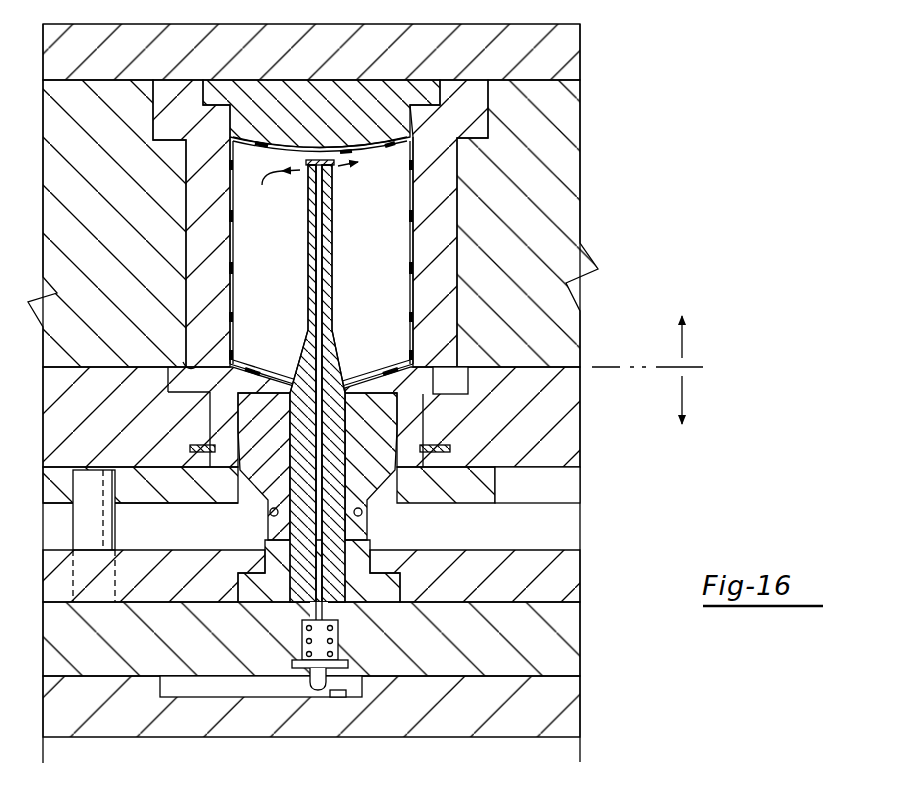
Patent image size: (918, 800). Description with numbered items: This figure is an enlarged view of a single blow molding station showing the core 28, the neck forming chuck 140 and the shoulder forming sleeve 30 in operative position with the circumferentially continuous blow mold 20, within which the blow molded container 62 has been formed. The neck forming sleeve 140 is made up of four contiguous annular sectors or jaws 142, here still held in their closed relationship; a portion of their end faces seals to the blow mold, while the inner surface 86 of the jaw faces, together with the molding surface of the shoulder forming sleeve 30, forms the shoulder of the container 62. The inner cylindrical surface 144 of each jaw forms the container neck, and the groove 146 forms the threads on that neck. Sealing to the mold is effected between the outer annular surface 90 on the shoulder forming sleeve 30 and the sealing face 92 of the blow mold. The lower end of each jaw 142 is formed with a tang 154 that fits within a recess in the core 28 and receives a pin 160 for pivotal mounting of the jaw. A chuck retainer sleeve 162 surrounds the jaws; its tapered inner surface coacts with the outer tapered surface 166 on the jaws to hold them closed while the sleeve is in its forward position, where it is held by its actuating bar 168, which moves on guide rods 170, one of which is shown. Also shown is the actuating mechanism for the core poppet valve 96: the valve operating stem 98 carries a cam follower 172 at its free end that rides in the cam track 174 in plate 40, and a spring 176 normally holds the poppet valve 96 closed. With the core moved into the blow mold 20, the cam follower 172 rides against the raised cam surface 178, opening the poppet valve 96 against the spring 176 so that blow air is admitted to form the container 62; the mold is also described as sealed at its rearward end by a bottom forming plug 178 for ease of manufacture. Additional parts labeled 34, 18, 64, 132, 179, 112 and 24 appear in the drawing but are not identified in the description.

The top clamp plate 34 is at (580, 60).
The blow mold 20 is at (485, 122).
The blow molded container 62 is at (418, 183).
The core poppet valve 96 is at (270, 193).
The core pin tip 179 is at (391, 135).
The core 28 is at (333, 266).
The sealing face of the blow mold 92 is at (184, 362).
The neck forming sleeve 140 is at (262, 398).
The groove 146 is at (295, 385).
The jaws 142 is at (365, 382).
The sealing face 86 is at (348, 392).
The outer annular surface 90 is at (417, 362).
The shoulder forming sleeve 30 is at (460, 375).
The stripper plate 18 is at (567, 400).
The chuck retainer sleeve 162 is at (400, 455).
The outer tapered surface 166 is at (253, 403).
The guide rods 170 is at (95, 487).
The tang 154 is at (267, 505).
The pin 160 is at (273, 512).
The inner cylindrical surface 144 is at (398, 485).
The actuating bar 168 is at (475, 505).
The support plate 64 is at (567, 578).
The spring 176 is at (302, 635).
The valve operating stem 98 is at (312, 610).
The intermediate plate 132 is at (567, 652).
The plate 40 is at (567, 723).
The cam track 174 is at (203, 693).
The cam follower 172 is at (316, 691).
The raised cam surface 178 is at (347, 693).
The opening direction 112 is at (658, 323).
The closing direction 24 is at (682, 415).